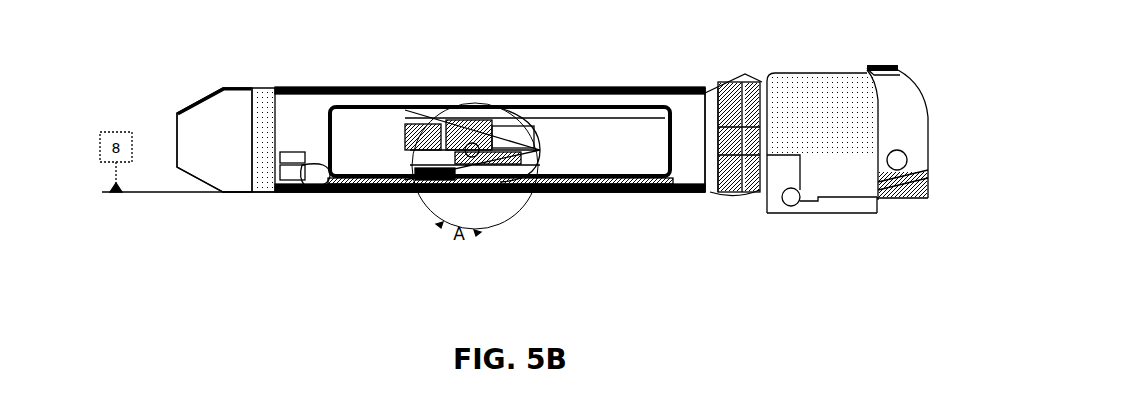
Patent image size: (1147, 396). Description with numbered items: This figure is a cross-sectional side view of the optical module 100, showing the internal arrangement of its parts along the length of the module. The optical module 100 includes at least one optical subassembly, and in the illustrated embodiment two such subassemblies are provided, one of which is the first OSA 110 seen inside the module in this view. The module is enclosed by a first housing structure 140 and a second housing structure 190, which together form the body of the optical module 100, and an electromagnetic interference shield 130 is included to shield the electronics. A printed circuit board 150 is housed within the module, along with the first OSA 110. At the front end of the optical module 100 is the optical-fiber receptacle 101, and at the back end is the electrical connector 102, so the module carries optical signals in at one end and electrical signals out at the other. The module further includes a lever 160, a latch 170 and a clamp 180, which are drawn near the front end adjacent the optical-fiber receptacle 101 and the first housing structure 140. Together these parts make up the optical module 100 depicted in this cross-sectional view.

The optical module 100 is at (192, 64).
The optical-fiber receptacle 101 is at (922, 91).
The electrical connector 102 is at (169, 136).
The first OSA 110 is at (633, 160).
The electromagnetic interference (EMI) shield 130 is at (722, 85).
The first housing structure 140 is at (800, 73).
The printed circuit board (PCB) 150 is at (385, 158).
The lever 160 is at (885, 68).
The latch 170 is at (905, 200).
The clamp 180 is at (843, 213).
The second housing structure 190 is at (577, 192).